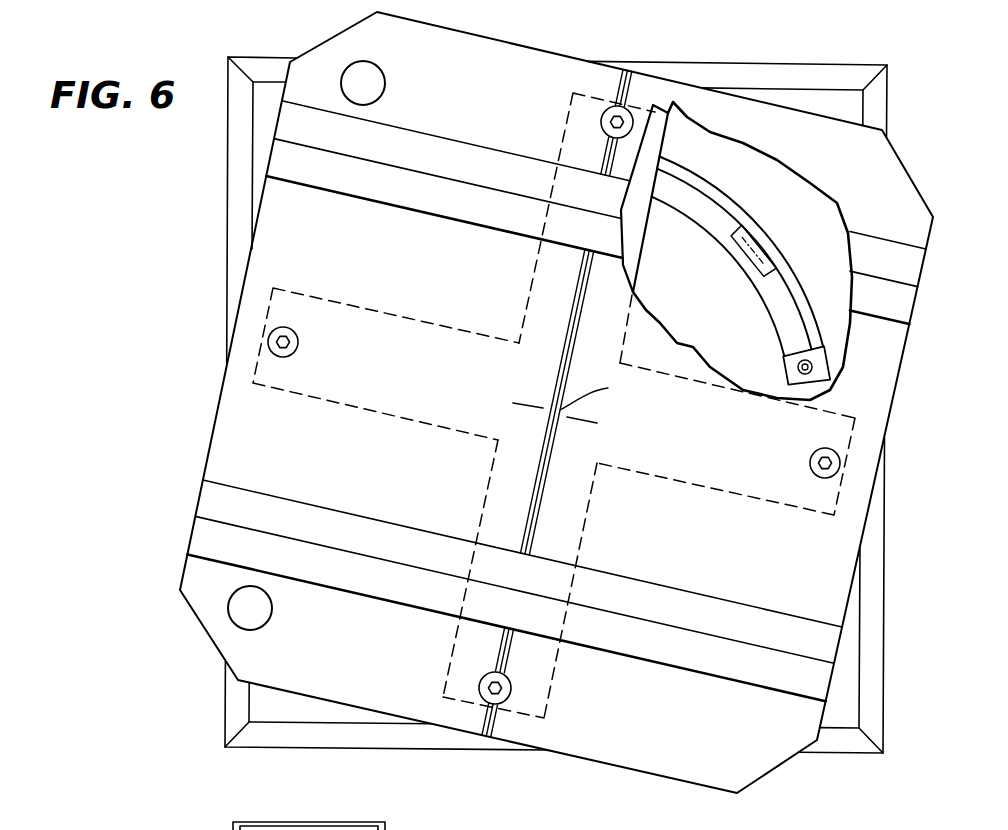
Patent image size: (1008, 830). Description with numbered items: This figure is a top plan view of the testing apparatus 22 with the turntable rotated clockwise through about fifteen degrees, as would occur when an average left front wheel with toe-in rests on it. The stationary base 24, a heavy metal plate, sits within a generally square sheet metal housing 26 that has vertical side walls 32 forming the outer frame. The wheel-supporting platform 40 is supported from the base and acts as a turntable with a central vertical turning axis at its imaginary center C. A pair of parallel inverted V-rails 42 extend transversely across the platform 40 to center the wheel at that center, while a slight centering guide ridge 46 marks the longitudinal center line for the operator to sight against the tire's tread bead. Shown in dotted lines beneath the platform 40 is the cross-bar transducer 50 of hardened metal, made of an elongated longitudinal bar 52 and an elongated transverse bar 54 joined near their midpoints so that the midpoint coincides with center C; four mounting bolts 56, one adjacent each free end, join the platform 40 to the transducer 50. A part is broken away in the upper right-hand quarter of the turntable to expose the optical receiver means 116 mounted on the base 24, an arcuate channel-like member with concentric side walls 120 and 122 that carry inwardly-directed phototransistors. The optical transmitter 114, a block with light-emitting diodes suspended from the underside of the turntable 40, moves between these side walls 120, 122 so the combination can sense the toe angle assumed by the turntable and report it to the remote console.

The testing apparatus 22 is at (166, 290).
The stationary base 24 is at (272, 705).
The sheet metal housing 26 is at (688, 55).
The vertical side walls 32 is at (228, 186).
The wheel-supporting platform 40 is at (418, 270).
The inverted V-rails 42 is at (405, 142).
The centering guide ridge 46 is at (540, 526).
The cross-bar transducer 50 is at (376, 414).
The elongated longitudinal bar 52 is at (567, 110).
The elongated transverse bar 54 is at (775, 510).
The mounting bolts 56 is at (607, 110).
The optical transmitter 114 is at (744, 265).
The optical receiver means 116 is at (752, 206).
The side wall 120 is at (706, 199).
The side wall 122 is at (797, 333).